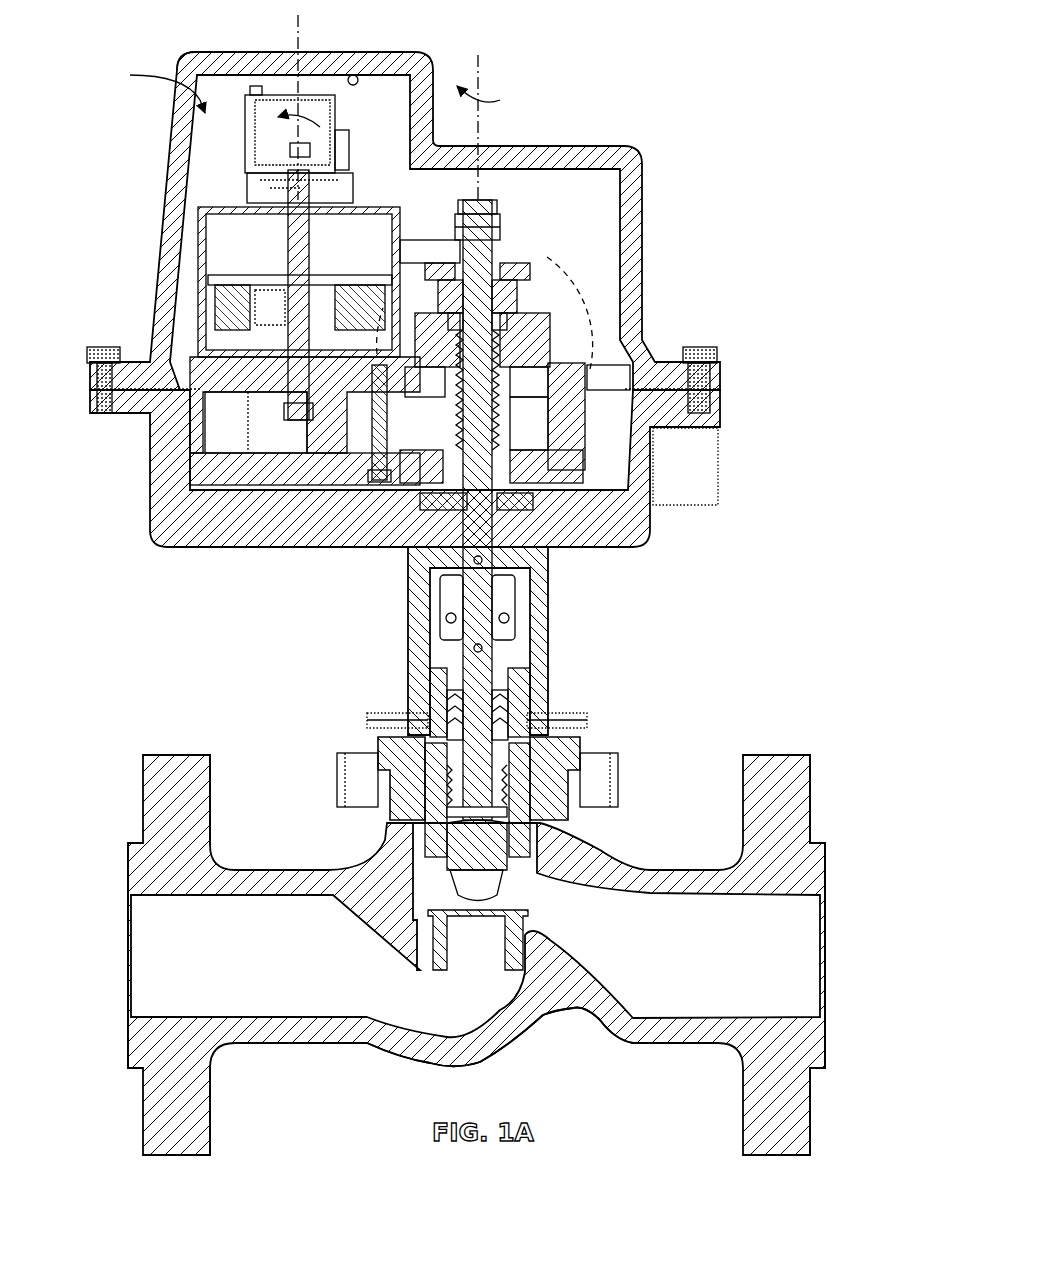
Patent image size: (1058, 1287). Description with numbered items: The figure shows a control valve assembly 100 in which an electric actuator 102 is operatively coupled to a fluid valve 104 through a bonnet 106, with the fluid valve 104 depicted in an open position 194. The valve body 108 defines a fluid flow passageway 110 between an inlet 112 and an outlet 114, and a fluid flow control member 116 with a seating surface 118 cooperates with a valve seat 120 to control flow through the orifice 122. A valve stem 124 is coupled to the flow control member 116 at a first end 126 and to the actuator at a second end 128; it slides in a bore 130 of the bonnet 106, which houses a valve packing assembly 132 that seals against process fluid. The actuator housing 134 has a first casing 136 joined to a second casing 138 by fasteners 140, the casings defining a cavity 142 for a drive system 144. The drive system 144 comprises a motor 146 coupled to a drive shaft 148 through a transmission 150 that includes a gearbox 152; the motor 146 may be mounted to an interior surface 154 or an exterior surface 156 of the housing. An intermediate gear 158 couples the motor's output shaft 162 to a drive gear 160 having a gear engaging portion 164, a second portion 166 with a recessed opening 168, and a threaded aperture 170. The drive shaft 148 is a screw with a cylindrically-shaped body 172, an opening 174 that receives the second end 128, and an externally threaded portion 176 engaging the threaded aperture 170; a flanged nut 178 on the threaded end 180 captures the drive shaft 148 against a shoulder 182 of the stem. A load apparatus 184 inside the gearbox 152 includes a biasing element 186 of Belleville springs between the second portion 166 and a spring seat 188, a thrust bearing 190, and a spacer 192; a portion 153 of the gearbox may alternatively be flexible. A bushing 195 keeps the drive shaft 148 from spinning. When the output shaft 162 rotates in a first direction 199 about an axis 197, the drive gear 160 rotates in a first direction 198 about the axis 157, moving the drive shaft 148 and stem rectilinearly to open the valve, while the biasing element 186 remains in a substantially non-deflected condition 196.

The control valve assembly 100 is at (693, 45).
The electric actuator 102 is at (417, 414).
The fluid valve 104 is at (465, 916).
The bonnet 106 is at (410, 612).
The valve body 108 is at (512, 1052).
The fluid flow passageway 110 is at (231, 956).
The inlet 112 is at (130, 960).
The outlet 114 is at (825, 943).
The fluid flow control member 116 is at (465, 850).
The seating surface 118 is at (505, 883).
The valve seat 120 is at (490, 948).
The port area or orifice 122 is at (452, 965).
The valve stem 124 is at (470, 677).
The first end 126 is at (470, 790).
The second end 128 is at (483, 200).
The bore 130 is at (505, 677).
The valve packing assembly 132 is at (440, 715).
The housing 134 is at (435, 87).
The first casing 136 is at (162, 184).
The second casing 138 is at (152, 480).
The fasteners 140 is at (100, 346).
The cavity 142 is at (400, 120).
The drive system 144 is at (243, 210).
The motor 146 is at (275, 95).
The drive shaft 148 is at (500, 253).
The transmission 150 is at (218, 423).
The gearbox 152 is at (187, 410).
The portion of the gearbox 153 is at (545, 303).
The interior surface 154 is at (352, 74).
The exterior surface 156 is at (215, 50).
The axis 157 is at (482, 80).
The intermediate gear 158 is at (322, 470).
The drive gear 160 is at (560, 490).
The output shaft 162 is at (262, 485).
The gear engaging portion 164 is at (380, 482).
The second portion 166 is at (719, 368).
The recessed opening 168 is at (720, 425).
The threaded aperture 170 is at (600, 435).
The cylindrically-shaped body 172 is at (445, 255).
The opening 174 is at (497, 260).
The externally threaded portion 176 is at (505, 280).
The flanged nut 178 is at (497, 235).
The threaded end 180 is at (495, 213).
The shoulder 182 is at (445, 580).
The load apparatus 184 is at (520, 360).
The biasing element 186 is at (560, 372).
The spring seat 188 is at (430, 300).
The thrust bearing 190 is at (545, 392).
The spacer 192 is at (585, 327).
The open position 194 is at (525, 872).
The bushing 195 is at (440, 250).
The substantially non-deflected condition 196 is at (615, 365).
The axis 197 is at (293, 46).
The first direction 198 is at (493, 100).
The first direction 199 is at (265, 147).